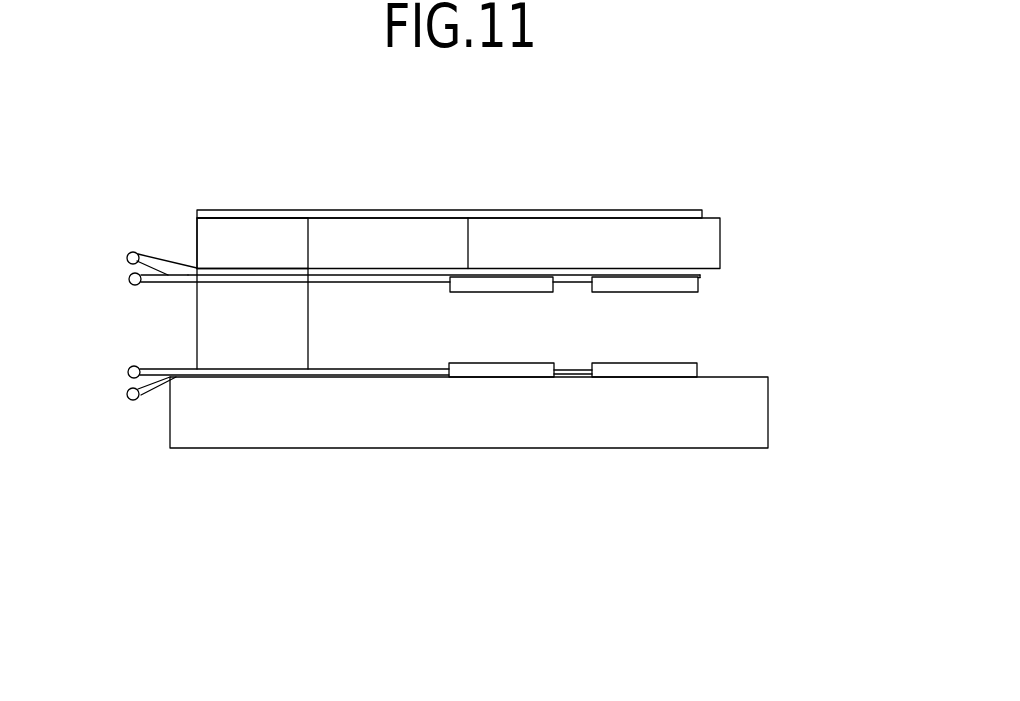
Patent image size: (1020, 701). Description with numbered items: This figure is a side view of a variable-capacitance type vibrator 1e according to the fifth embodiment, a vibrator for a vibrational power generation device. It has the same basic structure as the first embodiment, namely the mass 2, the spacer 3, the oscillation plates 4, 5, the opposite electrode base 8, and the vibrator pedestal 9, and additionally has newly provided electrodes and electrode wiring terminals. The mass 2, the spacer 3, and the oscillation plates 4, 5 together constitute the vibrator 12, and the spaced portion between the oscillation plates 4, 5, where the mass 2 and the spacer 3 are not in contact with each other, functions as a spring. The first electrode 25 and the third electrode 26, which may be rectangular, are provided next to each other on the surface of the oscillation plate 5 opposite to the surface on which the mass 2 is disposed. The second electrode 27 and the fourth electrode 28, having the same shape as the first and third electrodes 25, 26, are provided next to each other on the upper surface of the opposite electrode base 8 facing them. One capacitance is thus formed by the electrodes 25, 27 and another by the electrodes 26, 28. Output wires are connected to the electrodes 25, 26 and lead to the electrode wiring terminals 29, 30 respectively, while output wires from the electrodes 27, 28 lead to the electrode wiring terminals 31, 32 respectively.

The variable-capacitance type vibrator 1e is at (673, 141).
The vibrator 12 is at (513, 231).
The mass 2 is at (705, 240).
The spacer 3 is at (249, 240).
The oscillation plate 4 is at (432, 210).
The oscillation plate 5 is at (700, 273).
The opposite electrode base 8 is at (762, 414).
The vibrator pedestal 9 is at (208, 331).
The first electrode 25 is at (620, 287).
The third electrode 26 is at (465, 287).
The second electrode 27 is at (682, 368).
The fourth electrode 28 is at (535, 368).
The electrode wiring terminal 29 is at (129, 281).
The electrode wiring terminal 30 is at (127, 257).
The electrode wiring terminal 31 is at (128, 394).
The electrode wiring terminal 32 is at (128, 371).